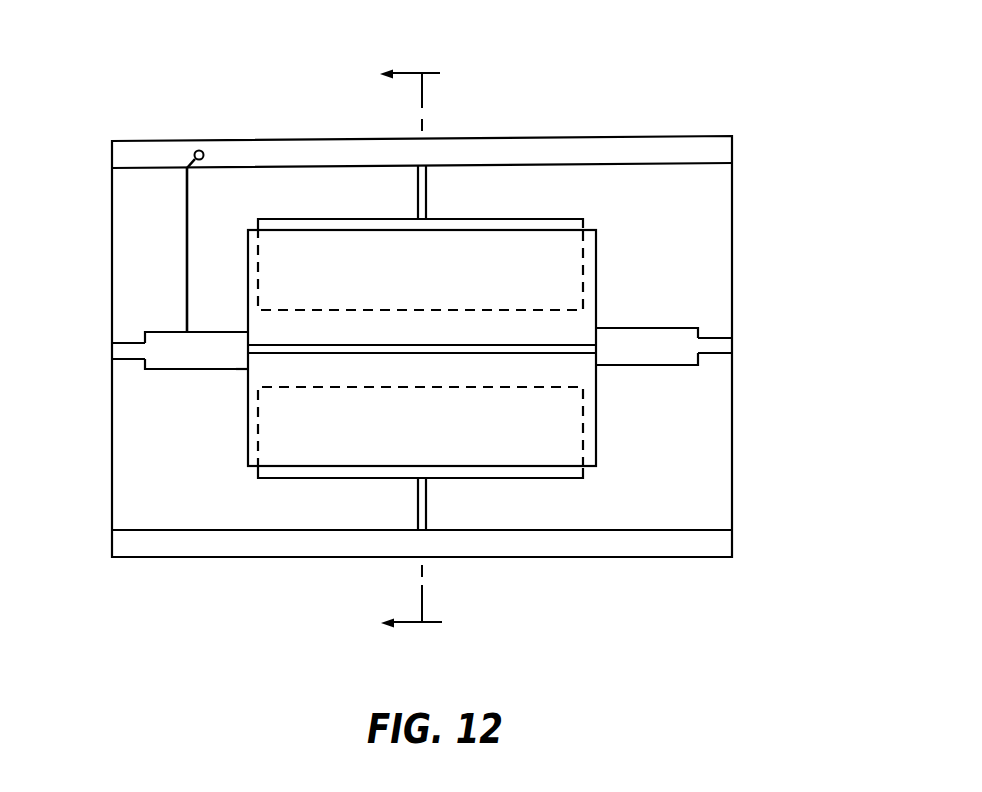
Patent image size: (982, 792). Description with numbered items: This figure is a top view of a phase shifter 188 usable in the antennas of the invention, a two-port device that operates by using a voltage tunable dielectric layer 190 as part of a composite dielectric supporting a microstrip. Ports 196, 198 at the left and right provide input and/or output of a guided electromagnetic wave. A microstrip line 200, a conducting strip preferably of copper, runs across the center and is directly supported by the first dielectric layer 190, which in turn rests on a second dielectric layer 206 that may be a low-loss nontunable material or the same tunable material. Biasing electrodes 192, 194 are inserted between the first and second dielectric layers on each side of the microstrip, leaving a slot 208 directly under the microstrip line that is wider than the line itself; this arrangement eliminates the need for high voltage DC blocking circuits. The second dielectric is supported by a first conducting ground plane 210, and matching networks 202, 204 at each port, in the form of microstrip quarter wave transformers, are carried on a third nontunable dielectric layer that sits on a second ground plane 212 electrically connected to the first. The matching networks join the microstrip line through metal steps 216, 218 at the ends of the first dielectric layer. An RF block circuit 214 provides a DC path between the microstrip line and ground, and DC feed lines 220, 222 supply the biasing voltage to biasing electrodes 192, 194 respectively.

The phase shifter 188 is at (616, 116).
The voltage tunable dielectric layer 190 is at (597, 266).
The biasing electrode 192 is at (556, 212).
The biasing electrode 194 is at (560, 480).
The port 196 is at (112, 350).
The port 198 is at (732, 339).
The microstrip line 200 is at (461, 343).
The matching network 202 is at (184, 368).
The matching network 204 is at (671, 357).
The second dielectric layer 206 is at (717, 224).
The slot 208 is at (583, 376).
The ground plane 210 is at (720, 147).
The second ground plane 212 is at (165, 342).
The RF block circuit 214 is at (195, 205).
The metal step 216 is at (246, 364).
The metal step 218 is at (597, 332).
The DC feed line 220 is at (428, 193).
The DC feed line 222 is at (428, 505).